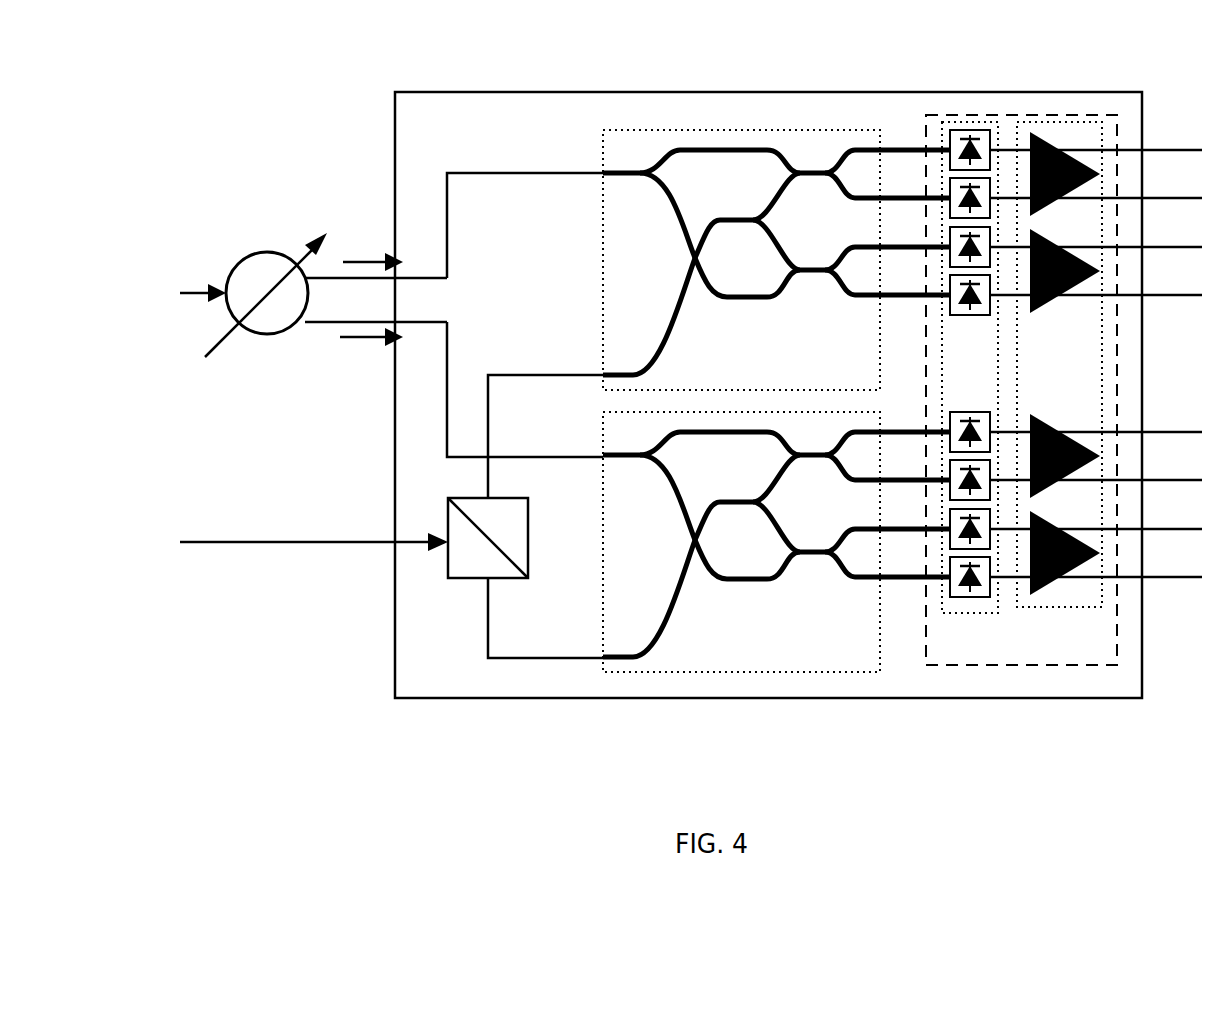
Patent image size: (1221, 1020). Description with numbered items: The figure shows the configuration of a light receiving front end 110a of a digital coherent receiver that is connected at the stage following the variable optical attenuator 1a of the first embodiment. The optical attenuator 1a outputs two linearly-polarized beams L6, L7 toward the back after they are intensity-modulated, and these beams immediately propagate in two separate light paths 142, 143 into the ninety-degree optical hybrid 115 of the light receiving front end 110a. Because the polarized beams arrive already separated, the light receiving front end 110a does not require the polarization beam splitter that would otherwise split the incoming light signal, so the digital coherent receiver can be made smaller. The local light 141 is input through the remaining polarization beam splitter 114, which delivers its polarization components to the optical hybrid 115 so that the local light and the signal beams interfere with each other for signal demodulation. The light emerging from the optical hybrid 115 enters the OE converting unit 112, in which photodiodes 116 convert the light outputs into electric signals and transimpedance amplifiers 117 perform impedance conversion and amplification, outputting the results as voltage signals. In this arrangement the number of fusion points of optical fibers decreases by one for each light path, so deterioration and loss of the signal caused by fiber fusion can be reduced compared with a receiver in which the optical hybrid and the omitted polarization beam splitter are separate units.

The optical attenuator 1a is at (262, 252).
The linearly-polarized beam L6 is at (364, 262).
The linearly-polarized beam L7 is at (360, 338).
The local light 141 is at (308, 543).
The light path 142 is at (432, 278).
The light path 143 is at (422, 322).
The polarization beam splitter 114 is at (467, 580).
The 90° optical hybrid 115 is at (683, 130).
The photodiode 116 is at (968, 613).
The transimpedance amplifier 117 is at (1077, 607).
The OE converting unit 112 is at (1037, 665).
The light receiving front end 110a is at (852, 698).